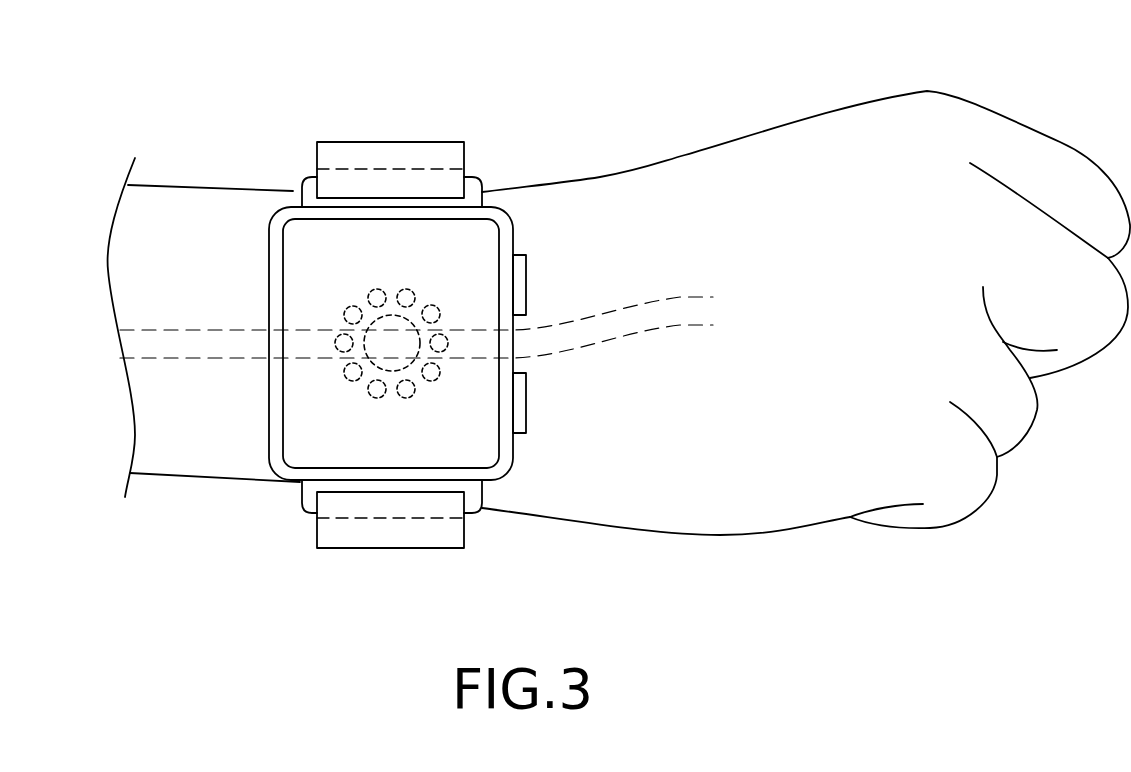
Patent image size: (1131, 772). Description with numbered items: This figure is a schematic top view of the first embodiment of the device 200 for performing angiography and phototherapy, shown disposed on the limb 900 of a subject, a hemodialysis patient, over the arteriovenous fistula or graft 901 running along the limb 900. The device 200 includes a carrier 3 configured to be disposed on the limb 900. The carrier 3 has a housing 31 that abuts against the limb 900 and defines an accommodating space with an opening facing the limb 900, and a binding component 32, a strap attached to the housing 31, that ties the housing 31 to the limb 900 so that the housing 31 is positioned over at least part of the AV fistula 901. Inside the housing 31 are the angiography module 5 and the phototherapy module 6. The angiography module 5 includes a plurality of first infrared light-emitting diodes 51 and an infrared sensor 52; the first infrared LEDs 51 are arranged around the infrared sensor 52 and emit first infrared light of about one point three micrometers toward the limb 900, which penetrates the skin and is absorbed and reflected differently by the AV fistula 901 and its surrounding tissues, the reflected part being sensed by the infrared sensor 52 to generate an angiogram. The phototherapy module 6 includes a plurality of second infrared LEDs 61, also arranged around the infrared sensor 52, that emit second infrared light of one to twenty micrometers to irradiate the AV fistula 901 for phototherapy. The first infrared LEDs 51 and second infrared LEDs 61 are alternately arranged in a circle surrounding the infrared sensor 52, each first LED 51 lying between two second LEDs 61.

The carrier 3 is at (394, 334).
The housing 31 is at (268, 435).
The binding component 32 is at (353, 548).
The device 200 is at (345, 141).
The angiography module 5 is at (488, 337).
The first infrared light-emitting diodes 51 is at (410, 288).
The infrared sensor 52 is at (402, 322).
The phototherapy module 6 is at (358, 398).
The second infrared light-emitting diodes 61 is at (437, 308).
The limb 900 is at (1003, 122).
The arteriovenous fistula 901 is at (684, 307).